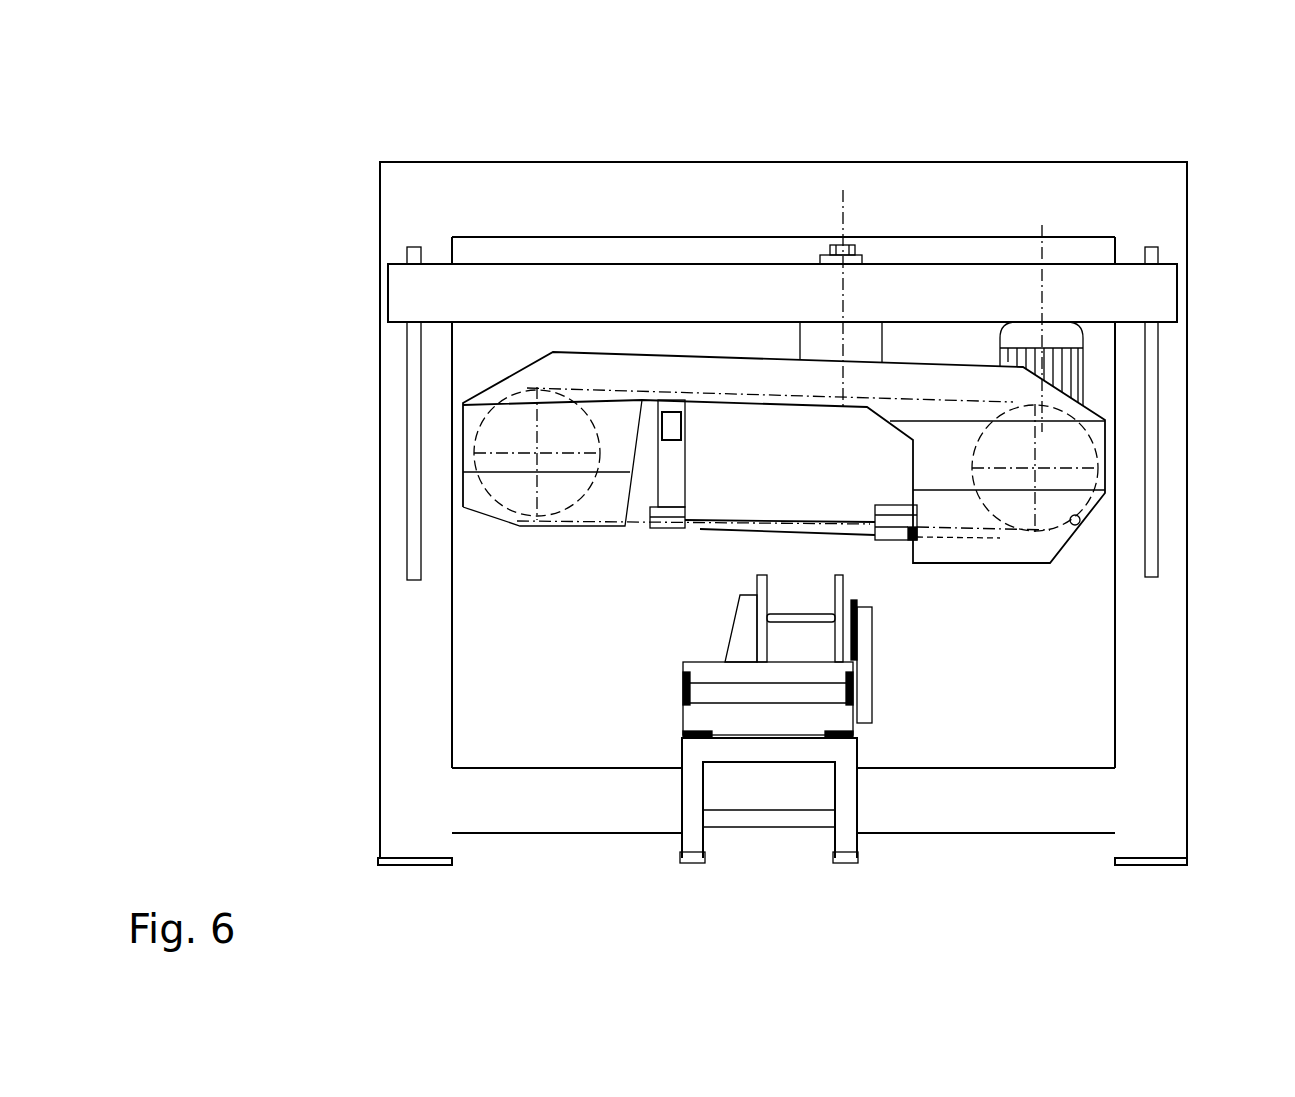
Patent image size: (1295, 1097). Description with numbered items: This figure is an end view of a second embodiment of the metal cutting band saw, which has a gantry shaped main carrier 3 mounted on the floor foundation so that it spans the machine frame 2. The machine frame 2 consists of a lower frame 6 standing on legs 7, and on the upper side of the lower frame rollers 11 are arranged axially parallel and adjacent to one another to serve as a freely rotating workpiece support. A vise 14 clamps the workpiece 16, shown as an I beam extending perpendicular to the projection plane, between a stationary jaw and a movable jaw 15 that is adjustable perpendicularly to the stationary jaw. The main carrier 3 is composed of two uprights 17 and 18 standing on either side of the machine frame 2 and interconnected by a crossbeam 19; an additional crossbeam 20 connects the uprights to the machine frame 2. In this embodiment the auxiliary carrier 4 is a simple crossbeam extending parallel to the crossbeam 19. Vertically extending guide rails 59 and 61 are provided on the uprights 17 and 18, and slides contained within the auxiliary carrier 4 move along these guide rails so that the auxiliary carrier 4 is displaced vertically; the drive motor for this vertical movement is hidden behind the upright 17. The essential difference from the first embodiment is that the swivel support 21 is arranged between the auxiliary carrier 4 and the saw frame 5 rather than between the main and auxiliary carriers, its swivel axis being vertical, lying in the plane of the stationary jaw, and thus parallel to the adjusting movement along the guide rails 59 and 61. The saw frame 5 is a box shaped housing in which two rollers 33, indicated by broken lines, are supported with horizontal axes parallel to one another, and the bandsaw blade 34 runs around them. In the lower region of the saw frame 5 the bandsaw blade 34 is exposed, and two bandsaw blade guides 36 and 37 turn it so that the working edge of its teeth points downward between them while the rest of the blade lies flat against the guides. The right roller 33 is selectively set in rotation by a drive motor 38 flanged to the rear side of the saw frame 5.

The machine frame 2 is at (662, 852).
The main carrier 3 is at (358, 118).
The auxiliary carrier 4 is at (553, 290).
The saw frame 5 is at (997, 588).
The lower frame 6 is at (1002, 862).
The legs 7 is at (853, 847).
The rollers 11 is at (703, 697).
The vise 14 is at (712, 612).
The movable jaw 15 is at (747, 608).
The workpiece 16 is at (847, 575).
The upright 17 is at (1173, 723).
The upright 18 is at (398, 677).
The crossbeam 19 is at (676, 204).
The additional crossbeam 20 is at (963, 810).
The swivel support 21 is at (874, 250).
The rollers 33 is at (1080, 522).
The bandsaw blade 34 is at (770, 400).
The bandsaw blade guide 36 is at (885, 505).
The bandsaw blade guide 37 is at (667, 490).
The drive motor 38 is at (510, 495).
The guide rail 59 is at (1152, 415).
The guide rail 61 is at (410, 408).